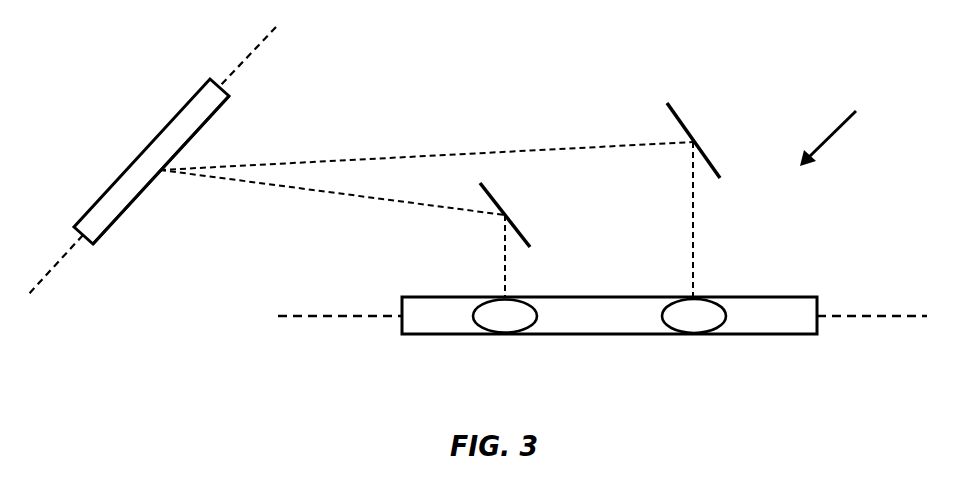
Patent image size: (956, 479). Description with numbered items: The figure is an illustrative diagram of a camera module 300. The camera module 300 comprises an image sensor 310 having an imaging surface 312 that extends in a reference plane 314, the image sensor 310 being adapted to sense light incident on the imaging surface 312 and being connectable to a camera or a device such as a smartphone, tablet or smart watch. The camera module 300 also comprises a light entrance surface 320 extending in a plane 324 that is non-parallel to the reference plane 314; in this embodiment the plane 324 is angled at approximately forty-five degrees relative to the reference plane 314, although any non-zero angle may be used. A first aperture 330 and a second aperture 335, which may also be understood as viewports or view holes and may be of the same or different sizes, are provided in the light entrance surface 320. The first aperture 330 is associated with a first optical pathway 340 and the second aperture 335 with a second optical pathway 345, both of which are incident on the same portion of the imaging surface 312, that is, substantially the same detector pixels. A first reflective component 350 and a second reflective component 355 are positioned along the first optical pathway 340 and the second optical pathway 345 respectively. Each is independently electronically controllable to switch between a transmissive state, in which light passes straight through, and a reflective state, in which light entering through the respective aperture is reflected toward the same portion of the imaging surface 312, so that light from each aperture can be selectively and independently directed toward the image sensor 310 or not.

The camera module 300 is at (844, 129).
The image sensor 310 is at (125, 193).
The imaging surface 312 is at (122, 212).
The reference plane 314 is at (37, 282).
The light entrance surface 320 is at (582, 323).
The plane 324 is at (300, 318).
The first aperture 330 is at (520, 299).
The second aperture 335 is at (712, 299).
The first optical pathway 340 is at (505, 263).
The second optical pathway 345 is at (693, 200).
The first reflective component 350 is at (505, 215).
The second reflective component 355 is at (693, 142).